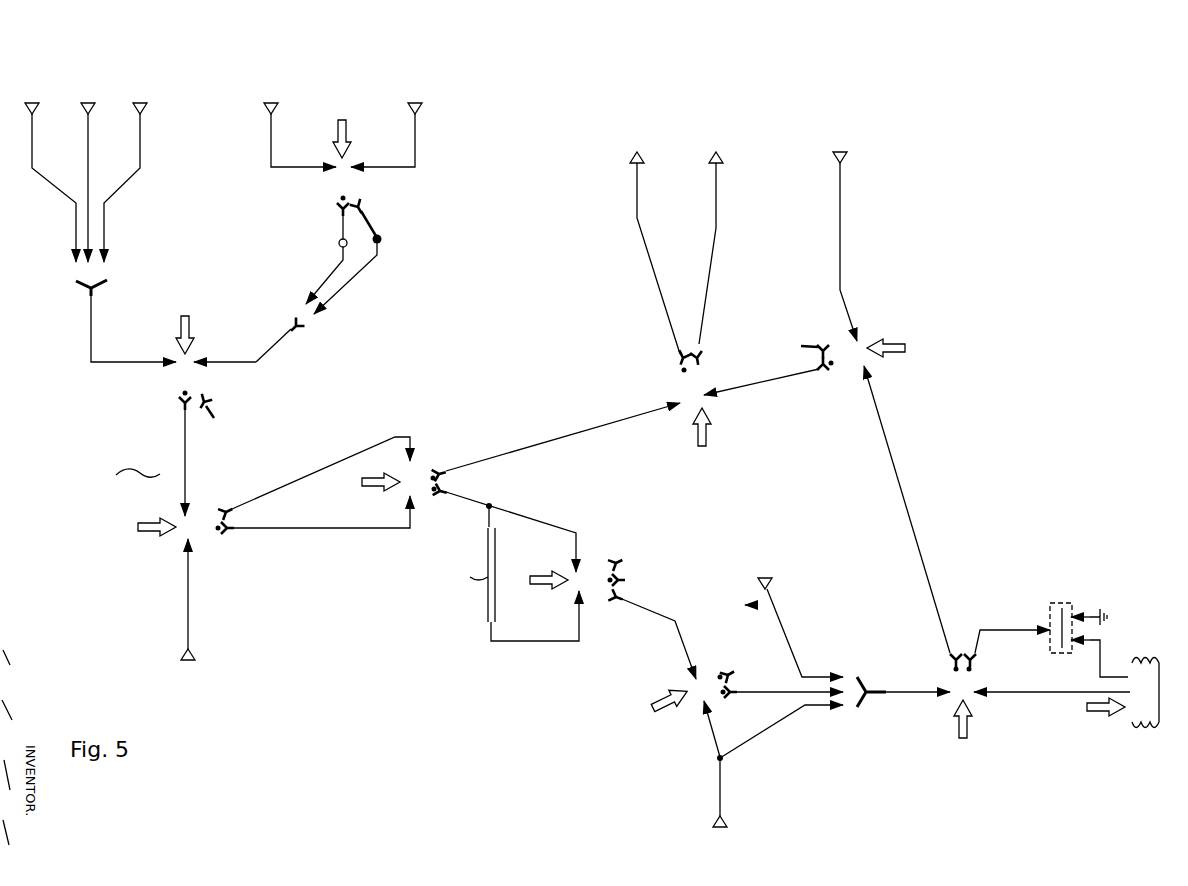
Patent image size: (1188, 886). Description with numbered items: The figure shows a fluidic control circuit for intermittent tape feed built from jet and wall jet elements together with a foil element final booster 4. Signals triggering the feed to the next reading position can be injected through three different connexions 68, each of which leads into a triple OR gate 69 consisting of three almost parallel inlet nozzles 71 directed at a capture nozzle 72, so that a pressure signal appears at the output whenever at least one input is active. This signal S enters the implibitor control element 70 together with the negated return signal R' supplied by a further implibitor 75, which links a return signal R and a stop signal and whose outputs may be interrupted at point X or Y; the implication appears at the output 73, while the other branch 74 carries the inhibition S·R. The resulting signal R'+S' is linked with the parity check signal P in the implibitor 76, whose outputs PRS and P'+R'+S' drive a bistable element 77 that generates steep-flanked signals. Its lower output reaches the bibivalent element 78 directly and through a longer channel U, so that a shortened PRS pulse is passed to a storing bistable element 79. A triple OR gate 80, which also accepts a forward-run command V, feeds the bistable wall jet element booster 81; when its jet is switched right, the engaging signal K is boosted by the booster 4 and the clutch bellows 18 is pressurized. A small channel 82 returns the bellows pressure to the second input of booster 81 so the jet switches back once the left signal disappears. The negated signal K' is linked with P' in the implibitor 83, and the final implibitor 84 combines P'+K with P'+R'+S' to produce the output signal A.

The connexions 68 is at (96, 109).
The triple OR gate 69 is at (86, 191).
The control element (implibitor) 70 is at (197, 329).
The inlet nozzles 71 is at (102, 240).
The capture nozzle 72 is at (93, 298).
The output 73 is at (184, 454).
The output branch S·R 74 is at (221, 422).
The implibitor 75 is at (357, 196).
The implibitor 76 is at (274, 563).
The bistable element 77 is at (521, 482).
The bibivalent element 78 is at (606, 591).
The bistable element 79 is at (731, 749).
The triple OR gate 80 is at (853, 630).
The bistable wall jet element booster 81 is at (957, 554).
The channel 82 is at (1061, 694).
The implibitor 83 is at (799, 287).
The AND gate for A inputs 84 is at (727, 251).
The foil element final booster 4 is at (1089, 625).
The clutch bellows 18 is at (1150, 712).